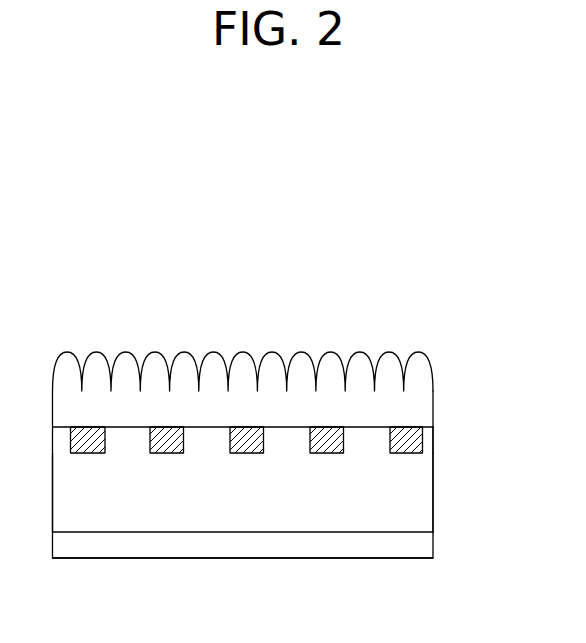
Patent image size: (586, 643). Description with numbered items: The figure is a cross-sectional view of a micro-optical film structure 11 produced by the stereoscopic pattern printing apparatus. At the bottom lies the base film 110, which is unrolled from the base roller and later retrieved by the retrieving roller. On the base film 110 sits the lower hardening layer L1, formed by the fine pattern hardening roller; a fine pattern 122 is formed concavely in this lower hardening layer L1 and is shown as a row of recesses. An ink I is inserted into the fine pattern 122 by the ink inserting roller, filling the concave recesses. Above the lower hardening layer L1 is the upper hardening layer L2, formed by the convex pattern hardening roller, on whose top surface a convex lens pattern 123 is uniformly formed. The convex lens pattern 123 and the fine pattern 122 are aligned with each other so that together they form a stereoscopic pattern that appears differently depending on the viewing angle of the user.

The micro-optical film structure 11 is at (278, 306).
The convex lens pattern 123 is at (355, 355).
The upper hardening layer L2 is at (427, 404).
The fine pattern 122 is at (168, 453).
The ink I is at (427, 440).
The lower hardening layer L1 is at (427, 477).
The base film 110 is at (427, 542).